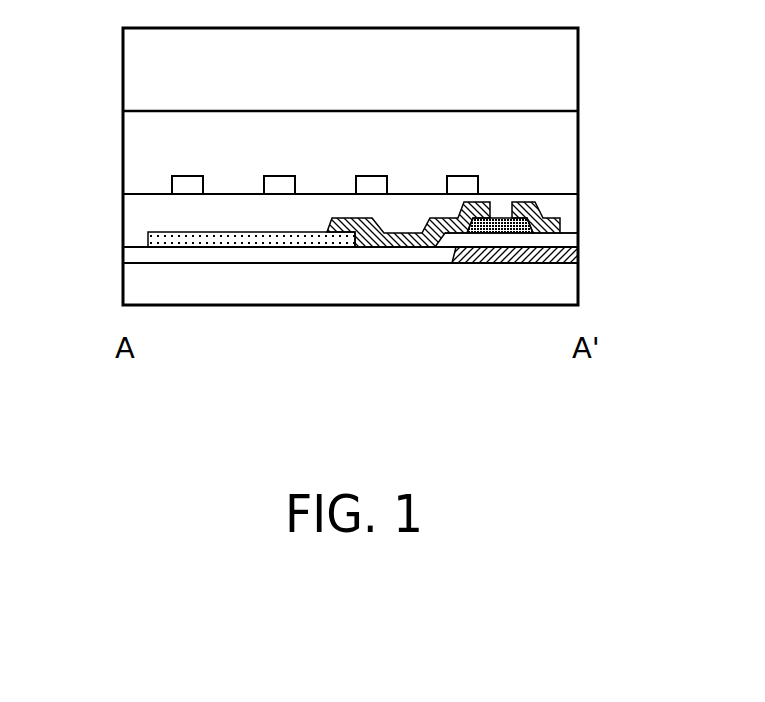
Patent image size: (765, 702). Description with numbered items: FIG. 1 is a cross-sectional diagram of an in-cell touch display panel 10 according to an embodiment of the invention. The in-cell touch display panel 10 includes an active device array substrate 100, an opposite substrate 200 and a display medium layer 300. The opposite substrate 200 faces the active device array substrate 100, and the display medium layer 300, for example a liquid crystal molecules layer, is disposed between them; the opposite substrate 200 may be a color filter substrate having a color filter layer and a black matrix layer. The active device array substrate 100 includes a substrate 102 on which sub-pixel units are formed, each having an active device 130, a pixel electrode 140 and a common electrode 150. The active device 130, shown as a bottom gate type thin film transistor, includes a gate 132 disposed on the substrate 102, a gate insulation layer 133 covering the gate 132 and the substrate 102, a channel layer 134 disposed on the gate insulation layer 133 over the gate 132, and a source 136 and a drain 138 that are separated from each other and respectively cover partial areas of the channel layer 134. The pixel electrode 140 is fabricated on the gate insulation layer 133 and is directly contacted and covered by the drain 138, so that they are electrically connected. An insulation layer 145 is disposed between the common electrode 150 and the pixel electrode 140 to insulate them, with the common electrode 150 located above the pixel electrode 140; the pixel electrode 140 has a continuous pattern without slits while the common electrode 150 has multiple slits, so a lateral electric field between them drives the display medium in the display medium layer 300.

The in-cell touch display panel 10 is at (680, 422).
The active device array substrate 100 is at (115, 194).
The substrate 102 is at (555, 285).
The active device 130 is at (450, 316).
The gate 132 is at (513, 245).
The gate insulation layer 133 is at (562, 242).
The channel layer 134 is at (487, 231).
The source 136 is at (515, 305).
The drain 138 is at (390, 247).
The pixel electrode 140 is at (277, 241).
The insulation layer 145 is at (565, 207).
The common electrode 150 is at (191, 187).
The opposite substrate 200 is at (115, 30).
The display medium layer 300 is at (115, 111).